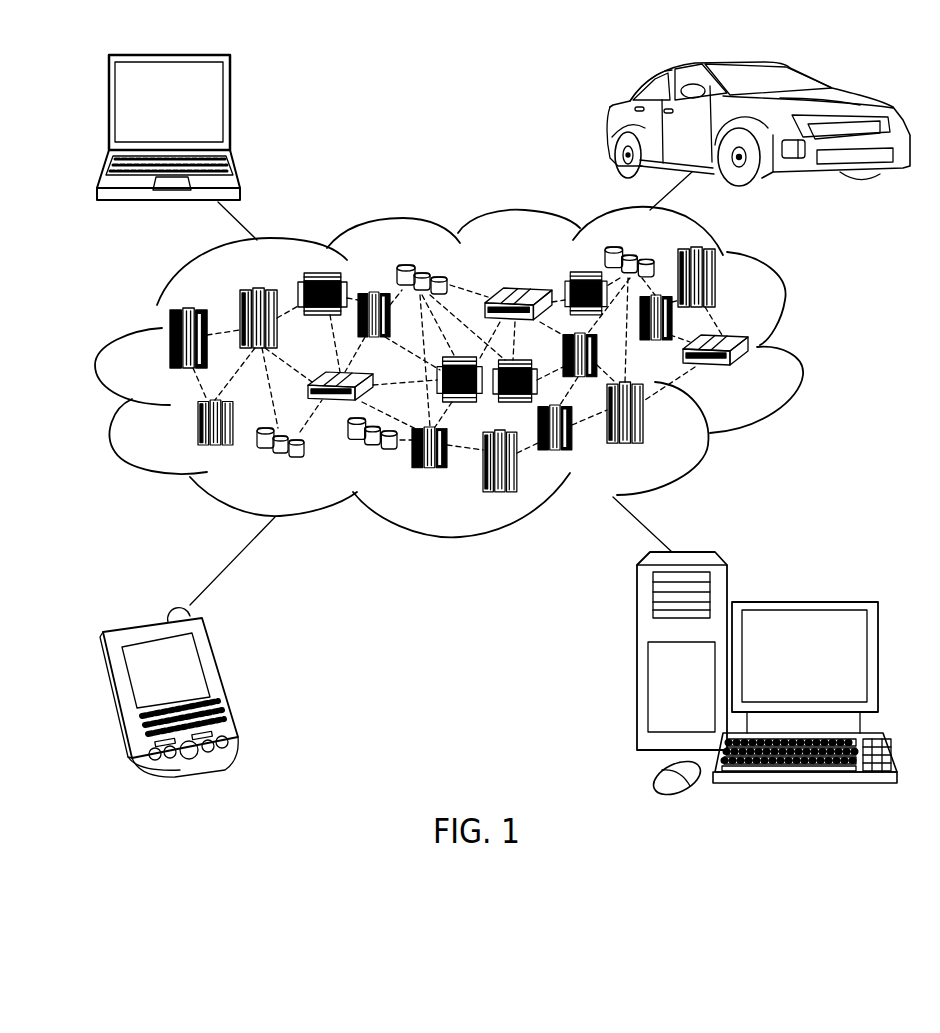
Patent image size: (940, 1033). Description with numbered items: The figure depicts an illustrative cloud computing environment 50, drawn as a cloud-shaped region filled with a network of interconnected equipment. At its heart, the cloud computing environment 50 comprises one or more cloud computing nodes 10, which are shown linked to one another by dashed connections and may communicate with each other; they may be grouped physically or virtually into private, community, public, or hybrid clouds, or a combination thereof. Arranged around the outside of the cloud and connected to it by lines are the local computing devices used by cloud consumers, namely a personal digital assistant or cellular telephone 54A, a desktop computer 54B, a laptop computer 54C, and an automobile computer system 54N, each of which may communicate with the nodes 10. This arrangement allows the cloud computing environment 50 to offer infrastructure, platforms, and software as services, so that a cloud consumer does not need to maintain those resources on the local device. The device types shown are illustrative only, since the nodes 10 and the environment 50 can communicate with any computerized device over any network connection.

The cloud computing node 10 is at (758, 381).
The cloud computing environment 50 is at (803, 352).
The personal digital assistant (PDA) or cellular telephone 54A is at (222, 679).
The desktop computer 54B is at (802, 601).
The laptop computer 54C is at (230, 110).
The automobile computer system 54N is at (611, 124).